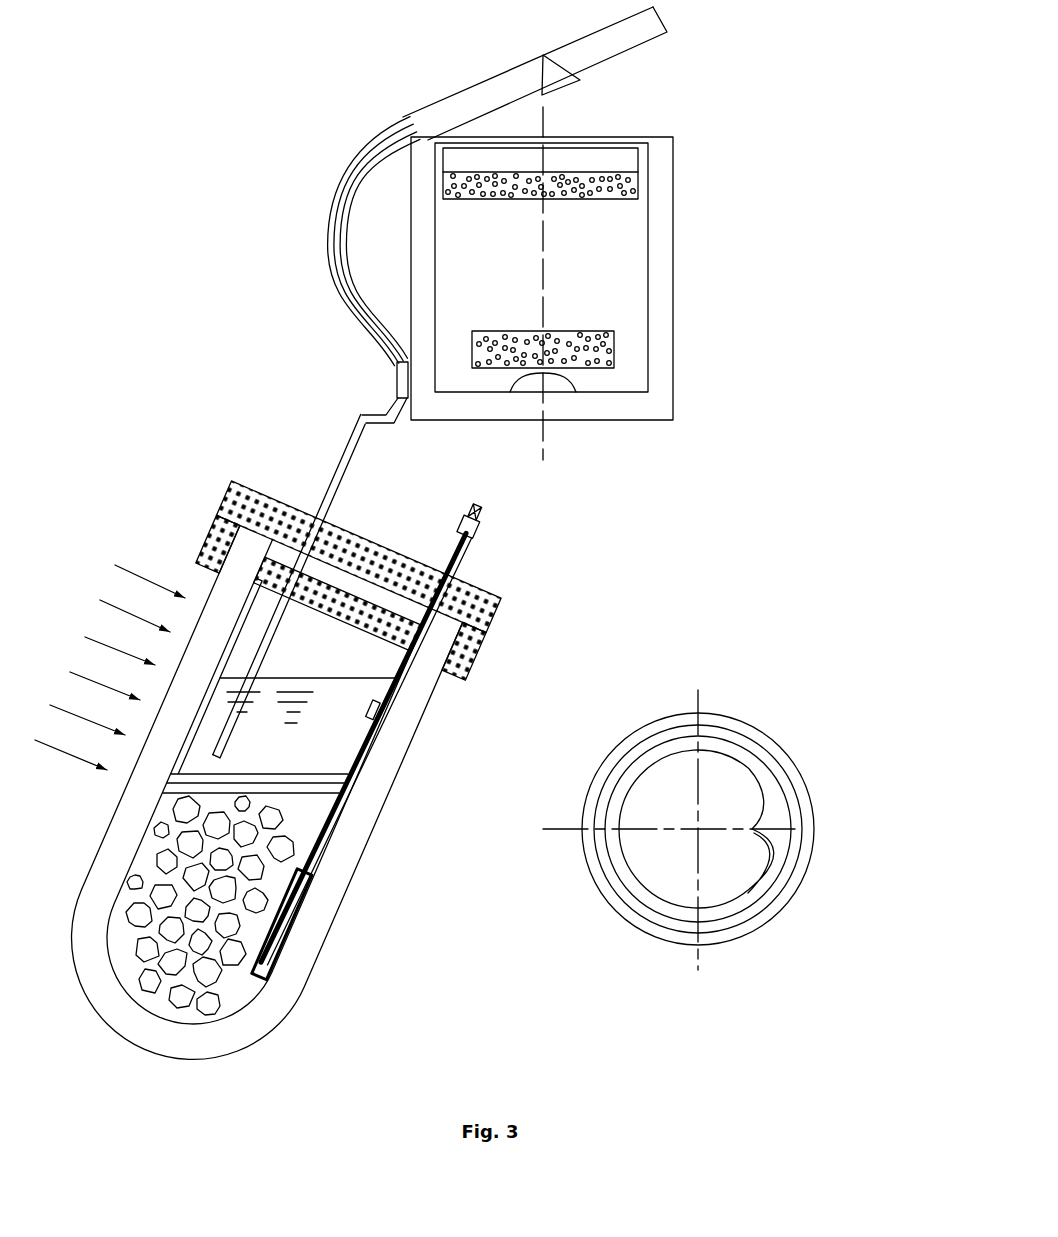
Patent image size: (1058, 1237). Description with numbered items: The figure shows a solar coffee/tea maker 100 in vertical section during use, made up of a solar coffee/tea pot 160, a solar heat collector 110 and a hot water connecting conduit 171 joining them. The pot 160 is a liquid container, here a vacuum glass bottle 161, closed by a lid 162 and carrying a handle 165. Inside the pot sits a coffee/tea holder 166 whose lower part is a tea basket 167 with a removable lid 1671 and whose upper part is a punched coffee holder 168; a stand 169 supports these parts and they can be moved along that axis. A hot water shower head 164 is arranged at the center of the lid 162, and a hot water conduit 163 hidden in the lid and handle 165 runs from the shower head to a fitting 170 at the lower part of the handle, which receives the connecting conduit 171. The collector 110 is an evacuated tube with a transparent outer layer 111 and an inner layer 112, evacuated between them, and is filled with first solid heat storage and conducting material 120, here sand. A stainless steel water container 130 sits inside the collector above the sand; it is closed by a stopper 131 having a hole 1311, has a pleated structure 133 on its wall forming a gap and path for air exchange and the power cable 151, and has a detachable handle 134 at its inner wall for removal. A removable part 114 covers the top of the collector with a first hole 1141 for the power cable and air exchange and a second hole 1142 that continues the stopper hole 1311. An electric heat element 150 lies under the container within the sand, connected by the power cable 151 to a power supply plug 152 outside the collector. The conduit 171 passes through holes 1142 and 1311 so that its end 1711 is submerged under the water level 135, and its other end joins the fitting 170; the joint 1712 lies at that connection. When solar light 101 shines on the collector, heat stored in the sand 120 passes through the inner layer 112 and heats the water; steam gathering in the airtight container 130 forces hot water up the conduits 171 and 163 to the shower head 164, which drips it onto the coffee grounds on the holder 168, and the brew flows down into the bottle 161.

The solar coffee/tea maker 100 is at (225, 160).
The solar light 101 is at (107, 667).
The solar heat collector 110 is at (372, 789).
The transparent outer layer 111 is at (281, 811).
The inner layer 112 is at (301, 796).
The removable part 114 is at (389, 580).
The first hole 1141 is at (501, 578).
The second hole 1142 is at (358, 500).
The first solid heat storage and conducting material 120 is at (279, 921).
The water container 130 is at (200, 630).
The removable part (stopper) 131 is at (414, 561).
The hole 1311 is at (338, 604).
The pleated structure 133 is at (444, 723).
The removable and detachable handle 134 is at (202, 541).
The water level 135 is at (279, 712).
The electric heat element 150 is at (359, 924).
The power cable 151 is at (402, 741).
The power supply plug 152 is at (505, 534).
The solar coffee/tea pot 160 is at (510, 231).
The vacuum glass bottle 161 is at (577, 278).
The lid 162 is at (534, 73).
The hot water conduit 163 is at (343, 226).
The hot water shower head 164 is at (582, 48).
The handle 165 is at (337, 246).
The coffee/tea holder 166 is at (575, 236).
The tea basket 167 is at (613, 333).
The removable lid 1671 is at (565, 332).
The punched coffee holder 168 is at (549, 148).
The stand (axis) 169 is at (587, 283).
The fitting 170 is at (335, 380).
The hot water connecting conduit 171 is at (262, 576).
The conduit end 1711 is at (168, 712).
The pipe joint 1712 is at (314, 410).